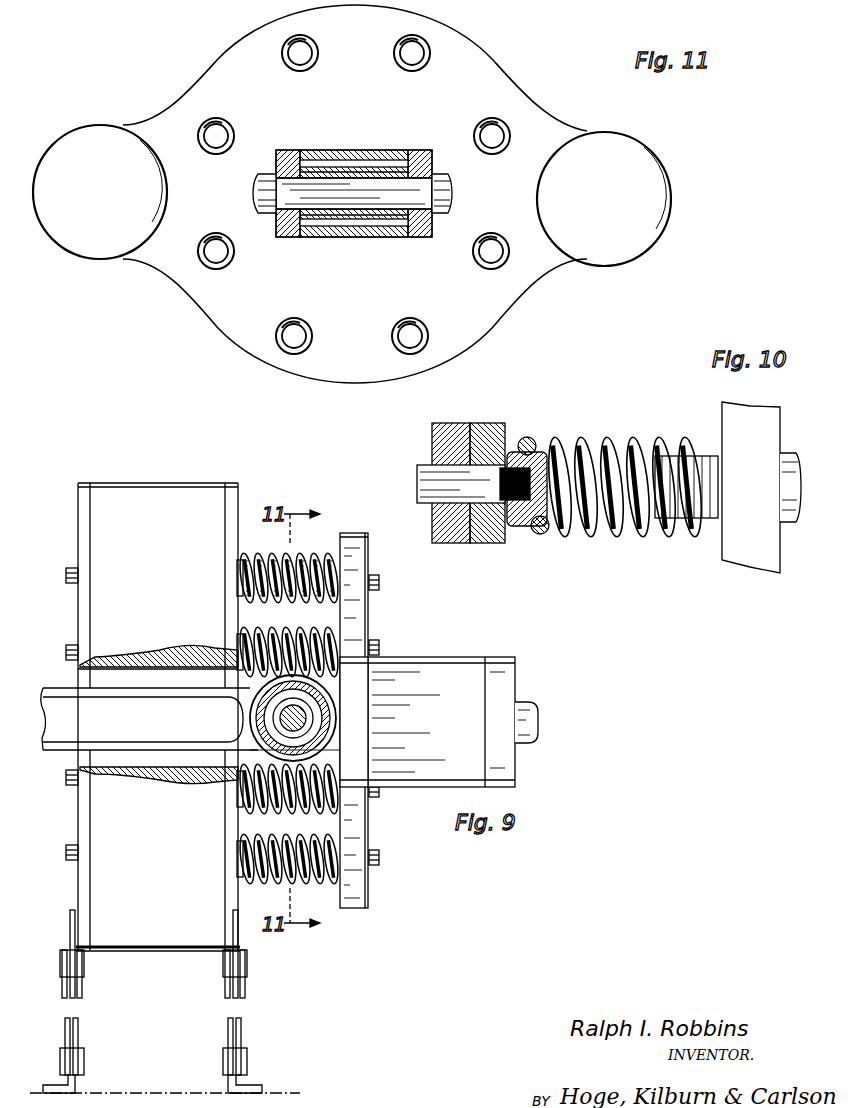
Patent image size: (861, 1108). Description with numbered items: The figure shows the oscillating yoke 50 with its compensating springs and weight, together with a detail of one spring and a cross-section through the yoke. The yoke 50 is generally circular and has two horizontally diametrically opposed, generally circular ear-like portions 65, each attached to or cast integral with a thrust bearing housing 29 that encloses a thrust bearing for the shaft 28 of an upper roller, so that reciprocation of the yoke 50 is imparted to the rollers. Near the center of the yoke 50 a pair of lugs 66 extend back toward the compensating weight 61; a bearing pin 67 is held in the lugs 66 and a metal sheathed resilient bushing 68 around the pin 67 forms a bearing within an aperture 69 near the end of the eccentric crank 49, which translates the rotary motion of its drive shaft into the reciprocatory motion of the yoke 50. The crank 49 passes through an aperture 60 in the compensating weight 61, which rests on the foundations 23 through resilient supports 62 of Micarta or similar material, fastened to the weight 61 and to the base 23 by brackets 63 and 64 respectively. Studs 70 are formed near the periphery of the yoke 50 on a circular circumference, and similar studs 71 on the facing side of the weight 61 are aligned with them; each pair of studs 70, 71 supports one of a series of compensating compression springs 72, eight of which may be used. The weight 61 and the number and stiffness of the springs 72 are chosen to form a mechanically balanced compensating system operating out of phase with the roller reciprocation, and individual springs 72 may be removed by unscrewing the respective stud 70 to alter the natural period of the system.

In FIG. 9, the foundations 23 is at (140, 1092).
In FIG. 9, the shaft 28 is at (535, 704).
In FIG. 9, the thrust bearing housing 29 is at (453, 657).
In FIG. 11, the eccentric crank 49 is at (340, 238).
In FIG. 9, the eccentric crank 49 is at (149, 719).
In FIG. 11, the oscillating yoke 50 is at (497, 68).
In FIG. 10, the oscillating yoke 50 is at (755, 560).
In FIG. 9, the oscillating yoke 50 is at (368, 906).
In FIG. 9, the aperture 60 is at (98, 680).
In FIG. 10, the compensating weight 61 is at (458, 424).
In FIG. 9, the compensating weight 61 is at (100, 546).
In FIG. 9, the resilient support 62 is at (80, 1023).
In FIG. 9, the bracket 63 is at (84, 966).
In FIG. 9, the bracket 64 is at (252, 1088).
In FIG. 11, the ear-like portion 65 is at (98, 132).
In FIG. 9, the ear-like portion 65 is at (352, 693).
In FIG. 11, the lug 66 is at (411, 150).
In FIG. 9, the lug 66 is at (336, 720).
In FIG. 11, the bearing pin 67 is at (452, 196).
In FIG. 9, the bearing pin 67 is at (266, 716).
In FIG. 11, the resilient bushing 68 is at (347, 151).
In FIG. 9, the resilient bushing 68 is at (262, 721).
In FIG. 11, the aperture 69 is at (373, 238).
In FIG. 9, the aperture 69 is at (268, 753).
In FIG. 11, the stud 70 is at (304, 50).
In FIG. 10, the stud 70 is at (692, 438).
In FIG. 9, the stud 70 is at (330, 556).
In FIG. 10, the stud 71 is at (524, 528).
In FIG. 9, the stud 71 is at (237, 582).
In FIG. 11, the compensating compression spring 72 is at (282, 56).
In FIG. 10, the compensating compression spring 72 is at (566, 440).
In FIG. 9, the compensating compression spring 72 is at (278, 555).